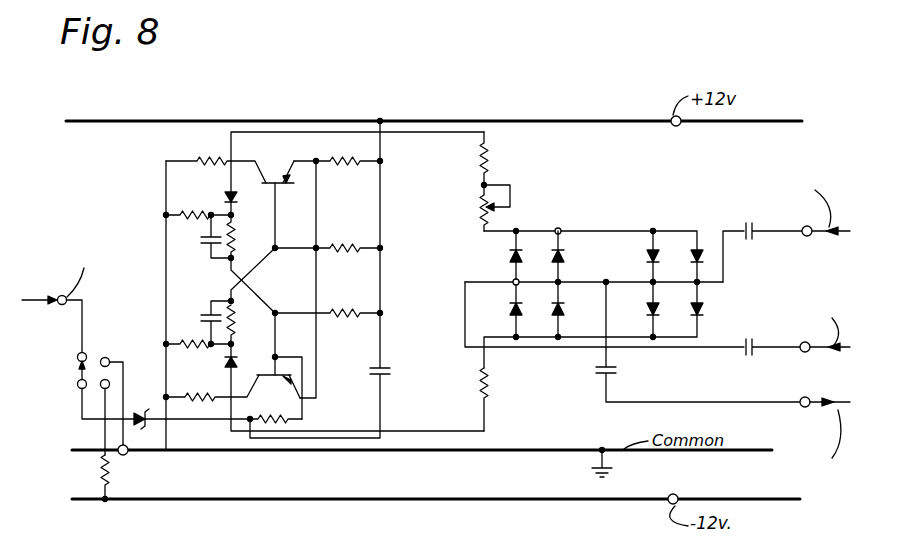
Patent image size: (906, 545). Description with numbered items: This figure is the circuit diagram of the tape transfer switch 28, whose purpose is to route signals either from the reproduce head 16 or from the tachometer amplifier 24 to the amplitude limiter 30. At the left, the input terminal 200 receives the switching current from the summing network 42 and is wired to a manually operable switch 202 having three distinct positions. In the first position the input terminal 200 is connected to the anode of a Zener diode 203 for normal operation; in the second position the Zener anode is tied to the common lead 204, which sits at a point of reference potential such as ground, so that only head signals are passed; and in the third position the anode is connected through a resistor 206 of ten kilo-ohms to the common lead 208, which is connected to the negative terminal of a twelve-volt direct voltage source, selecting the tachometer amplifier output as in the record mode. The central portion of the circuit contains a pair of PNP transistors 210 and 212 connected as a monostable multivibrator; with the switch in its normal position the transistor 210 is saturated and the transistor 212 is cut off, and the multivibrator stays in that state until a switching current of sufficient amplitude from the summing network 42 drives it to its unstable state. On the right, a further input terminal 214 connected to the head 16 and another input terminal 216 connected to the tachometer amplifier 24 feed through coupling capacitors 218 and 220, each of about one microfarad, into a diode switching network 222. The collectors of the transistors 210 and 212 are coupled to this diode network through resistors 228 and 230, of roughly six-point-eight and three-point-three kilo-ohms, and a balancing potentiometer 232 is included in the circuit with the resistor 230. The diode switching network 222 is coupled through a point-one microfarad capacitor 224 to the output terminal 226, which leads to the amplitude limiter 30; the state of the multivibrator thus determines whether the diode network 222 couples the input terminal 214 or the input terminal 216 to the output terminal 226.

The input terminal 200 is at (66, 305).
The manually operable switch 202 is at (103, 357).
The Zener diode 203 is at (137, 428).
The common lead 204 is at (566, 452).
The resistor 206 is at (100, 472).
The common lead 208 is at (603, 500).
The PNP transistor 210 is at (284, 187).
The PNP transistor 212 is at (263, 372).
The input terminal 214 is at (810, 237).
The input terminal 216 is at (808, 353).
The coupling capacitor 218 is at (745, 232).
The coupling capacitor 220 is at (746, 342).
The diode switching network 222 is at (628, 270).
The capacitor 224 is at (606, 377).
The output terminal 226 is at (804, 398).
The resistor 228 is at (486, 401).
The resistor 230 is at (490, 164).
The balancing potentiometer 232 is at (484, 205).
The reproduce head 16 is at (793, 190).
The tachometer amplifier 24 is at (799, 307).
The tape transfer switch 28 is at (302, 20).
The amplitude limiter 30 is at (765, 452).
The summing network 42 is at (76, 231).